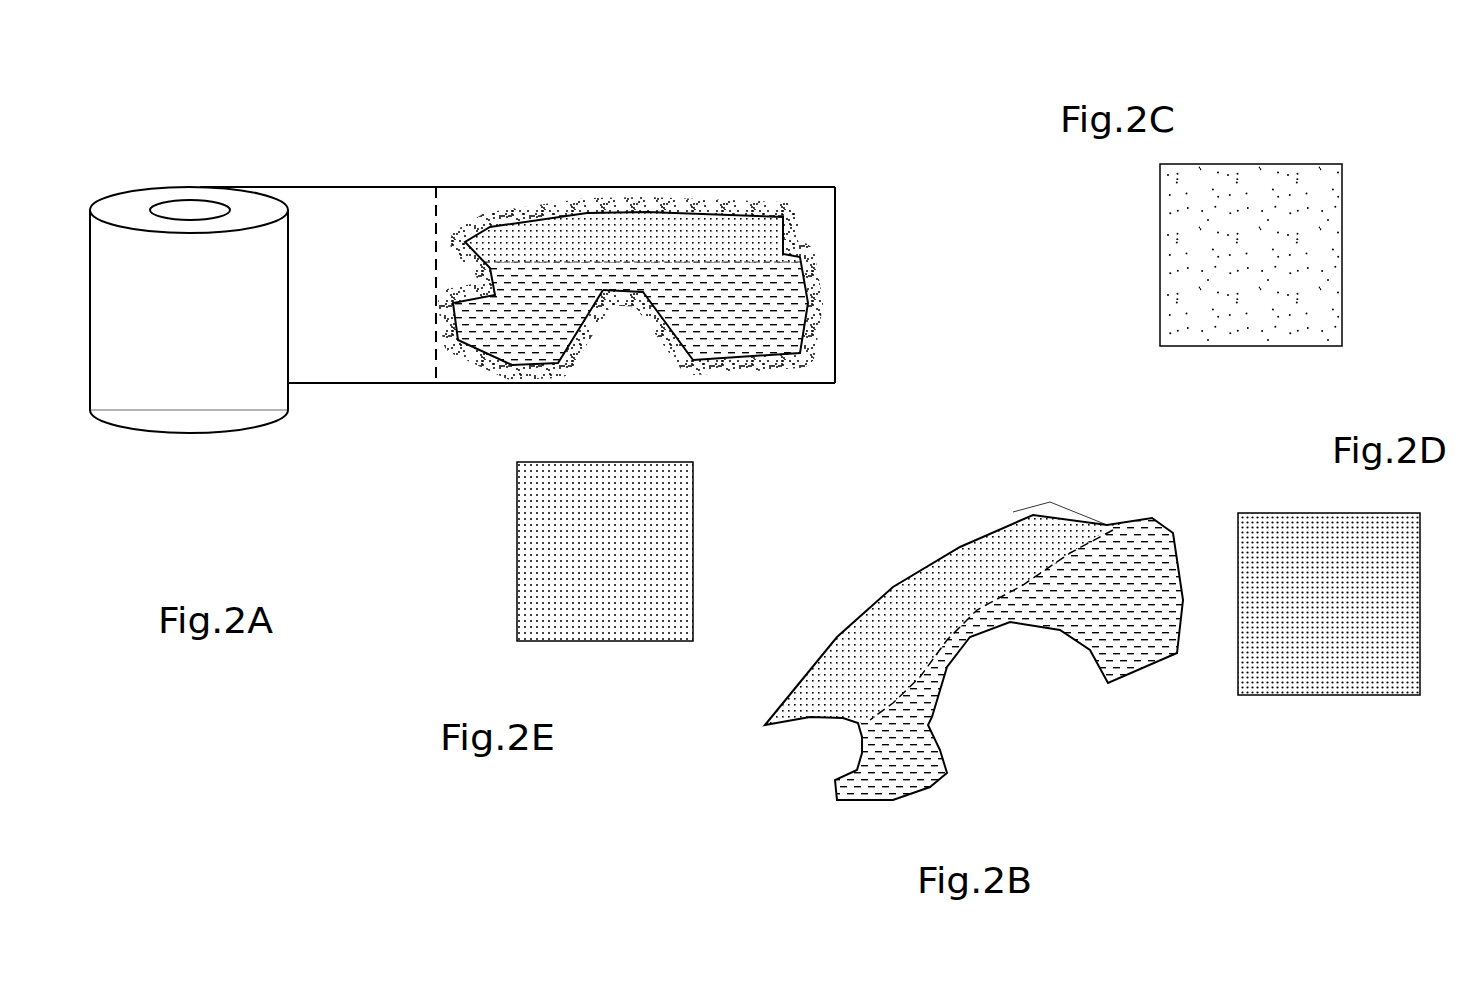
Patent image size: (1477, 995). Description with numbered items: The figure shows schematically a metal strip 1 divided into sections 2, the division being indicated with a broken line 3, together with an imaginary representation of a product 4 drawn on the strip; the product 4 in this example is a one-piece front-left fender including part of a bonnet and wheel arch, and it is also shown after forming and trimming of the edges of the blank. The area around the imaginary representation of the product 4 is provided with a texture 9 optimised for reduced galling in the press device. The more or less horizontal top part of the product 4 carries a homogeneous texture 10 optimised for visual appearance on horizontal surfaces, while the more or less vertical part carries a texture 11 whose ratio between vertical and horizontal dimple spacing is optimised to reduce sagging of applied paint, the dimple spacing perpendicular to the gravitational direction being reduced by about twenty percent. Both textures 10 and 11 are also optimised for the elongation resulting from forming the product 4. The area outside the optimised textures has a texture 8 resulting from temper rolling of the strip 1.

In FIG. 2A, the strip 1 is at (180, 395).
In FIG. 2A, the sections 2 is at (477, 174).
In FIG. 2A, the broken line 3 is at (435, 383).
In FIG. 2A, the product 4 is at (731, 203).
In FIG. 2B, the product 4 is at (982, 500).
In FIG. 2A, the texture 8 is at (630, 355).
In FIG. 2A, the texture 9 is at (795, 232).
In FIG. 2C, the texture 9 is at (1200, 270).
In FIG. 2A, the homogeneous texture 10 is at (623, 230).
In FIG. 2B, the homogeneous texture 10 is at (846, 670).
In FIG. 2E, the homogeneous texture 10 is at (645, 543).
In FIG. 2A, the texture 11 is at (510, 338).
In FIG. 2B, the texture 11 is at (1138, 640).
In FIG. 2D, the texture 11 is at (1322, 673).